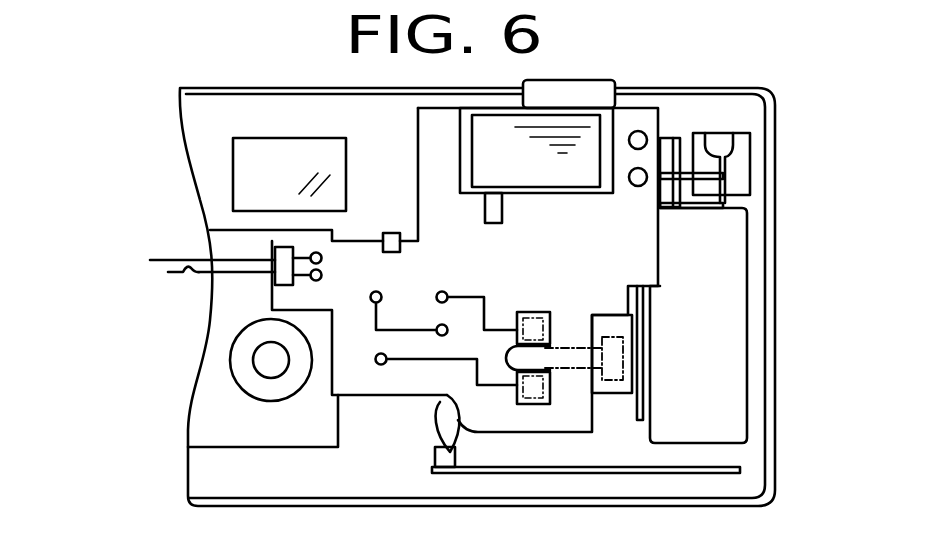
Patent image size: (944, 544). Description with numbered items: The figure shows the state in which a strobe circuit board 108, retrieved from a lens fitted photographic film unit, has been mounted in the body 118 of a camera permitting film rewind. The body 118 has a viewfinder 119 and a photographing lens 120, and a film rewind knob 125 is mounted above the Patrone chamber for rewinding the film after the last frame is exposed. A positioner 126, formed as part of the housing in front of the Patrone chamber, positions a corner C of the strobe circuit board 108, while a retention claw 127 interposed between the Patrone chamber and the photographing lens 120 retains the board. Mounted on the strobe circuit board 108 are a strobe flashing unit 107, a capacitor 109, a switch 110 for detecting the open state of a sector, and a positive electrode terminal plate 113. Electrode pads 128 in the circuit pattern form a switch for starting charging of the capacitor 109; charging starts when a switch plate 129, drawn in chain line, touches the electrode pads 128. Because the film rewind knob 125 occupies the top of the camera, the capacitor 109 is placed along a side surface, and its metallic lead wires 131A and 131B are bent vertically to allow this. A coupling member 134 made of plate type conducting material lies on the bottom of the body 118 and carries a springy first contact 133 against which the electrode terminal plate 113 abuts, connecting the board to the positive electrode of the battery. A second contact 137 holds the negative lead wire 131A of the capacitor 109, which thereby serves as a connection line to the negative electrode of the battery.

The strobe flashing unit 107 is at (478, 139).
The strobe circuit board 108 is at (628, 246).
The capacitor 109 is at (728, 276).
The switch 110 is at (171, 268).
The electrode terminal plate 113 is at (438, 420).
The body 118 is at (180, 88).
The viewfinder 119 is at (236, 163).
The photographing lens 120 is at (237, 360).
The film rewind knob 125 is at (527, 84).
The positioner 126 is at (610, 394).
The retention claw 127 is at (388, 233).
The electrode pads 128 is at (521, 312).
The switch plate 129 is at (578, 347).
The lead wire 131A is at (723, 203).
The lead wire 131B is at (673, 140).
The first contact 133 is at (435, 453).
The coupling member 134 is at (722, 476).
The second contact 137 is at (742, 150).
The corner C is at (608, 298).